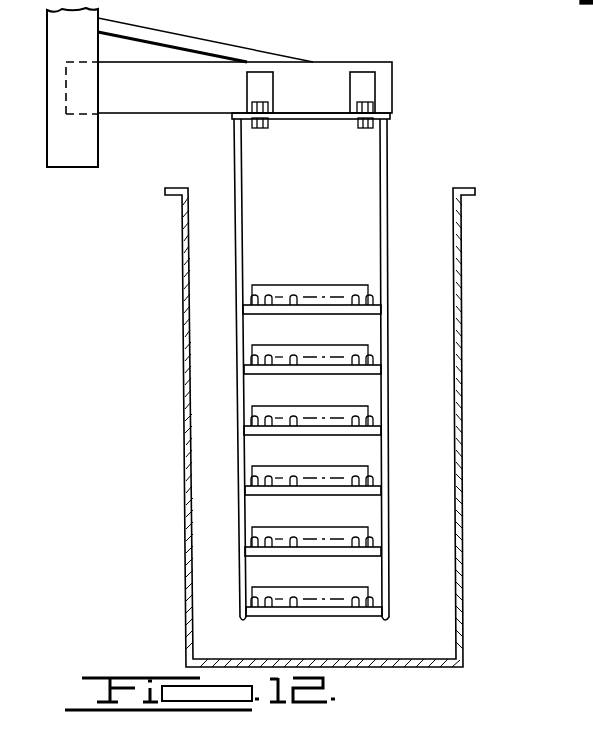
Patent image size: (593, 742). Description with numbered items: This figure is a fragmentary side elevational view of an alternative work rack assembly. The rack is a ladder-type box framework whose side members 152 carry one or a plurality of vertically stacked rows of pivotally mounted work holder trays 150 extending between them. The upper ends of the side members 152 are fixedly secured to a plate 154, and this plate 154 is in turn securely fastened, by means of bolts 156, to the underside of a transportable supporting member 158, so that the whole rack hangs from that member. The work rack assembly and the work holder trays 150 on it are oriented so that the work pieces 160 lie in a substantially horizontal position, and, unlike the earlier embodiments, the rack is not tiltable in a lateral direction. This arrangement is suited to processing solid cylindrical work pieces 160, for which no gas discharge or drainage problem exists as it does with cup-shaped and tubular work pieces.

The work holder trays 150 is at (250, 302).
The side members 152 is at (242, 209).
The plate 154 is at (299, 120).
The bolts 156 is at (252, 100).
The transportable supporting member 158 is at (308, 70).
The work pieces 160 is at (368, 290).